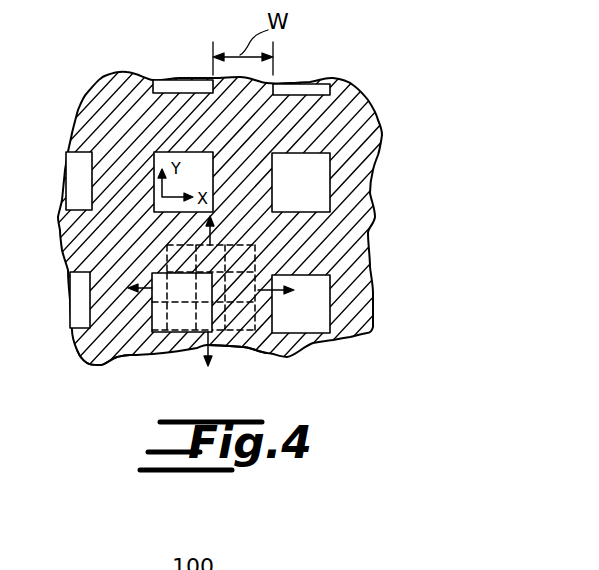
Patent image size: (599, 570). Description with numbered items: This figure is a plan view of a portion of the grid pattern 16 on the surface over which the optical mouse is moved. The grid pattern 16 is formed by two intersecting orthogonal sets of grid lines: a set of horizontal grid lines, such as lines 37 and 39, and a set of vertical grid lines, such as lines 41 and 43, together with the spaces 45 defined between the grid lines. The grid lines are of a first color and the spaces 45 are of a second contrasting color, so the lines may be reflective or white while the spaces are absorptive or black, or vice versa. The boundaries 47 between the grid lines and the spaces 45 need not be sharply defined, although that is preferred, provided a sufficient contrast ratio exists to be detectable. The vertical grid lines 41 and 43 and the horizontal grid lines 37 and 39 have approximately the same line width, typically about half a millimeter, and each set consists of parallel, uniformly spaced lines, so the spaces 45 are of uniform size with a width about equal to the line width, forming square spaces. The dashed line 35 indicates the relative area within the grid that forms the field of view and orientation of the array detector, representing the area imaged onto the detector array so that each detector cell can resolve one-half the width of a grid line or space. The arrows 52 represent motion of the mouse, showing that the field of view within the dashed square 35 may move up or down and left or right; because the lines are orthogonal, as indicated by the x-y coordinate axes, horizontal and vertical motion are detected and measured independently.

The grid pattern 16 is at (384, 166).
The dashed line 35 is at (262, 259).
The horizontal grid line 37 is at (77, 133).
The horizontal grid line 39 is at (62, 250).
The vertical grid line 41 is at (120, 353).
The vertical grid line 43 is at (237, 343).
The spaces 45 is at (315, 308).
The boundaries 47 is at (290, 178).
The arrows 52 is at (282, 317).